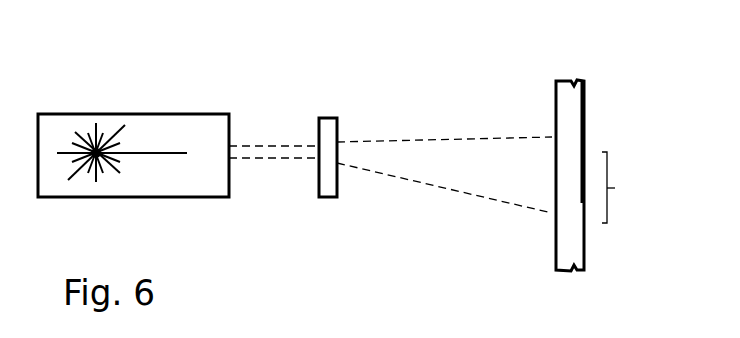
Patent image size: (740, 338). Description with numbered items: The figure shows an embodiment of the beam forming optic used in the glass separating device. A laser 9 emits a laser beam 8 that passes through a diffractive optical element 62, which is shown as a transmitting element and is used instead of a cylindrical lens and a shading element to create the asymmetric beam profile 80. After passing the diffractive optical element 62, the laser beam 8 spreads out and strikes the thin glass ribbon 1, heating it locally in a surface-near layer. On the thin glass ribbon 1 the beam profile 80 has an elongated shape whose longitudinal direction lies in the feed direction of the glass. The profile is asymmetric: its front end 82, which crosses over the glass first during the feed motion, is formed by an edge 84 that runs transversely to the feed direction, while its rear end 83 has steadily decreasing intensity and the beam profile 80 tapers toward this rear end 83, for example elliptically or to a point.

The laser 9 is at (133, 114).
The laser beam 8 is at (262, 148).
The diffractive optical element 62 is at (328, 118).
The thin glass ribbon 1 is at (572, 107).
The front end of the beam profile 82 is at (552, 137).
The edge 84 is at (552, 137).
The rear end of the beam profile 83 is at (552, 213).
The beam profile 80 is at (625, 187).